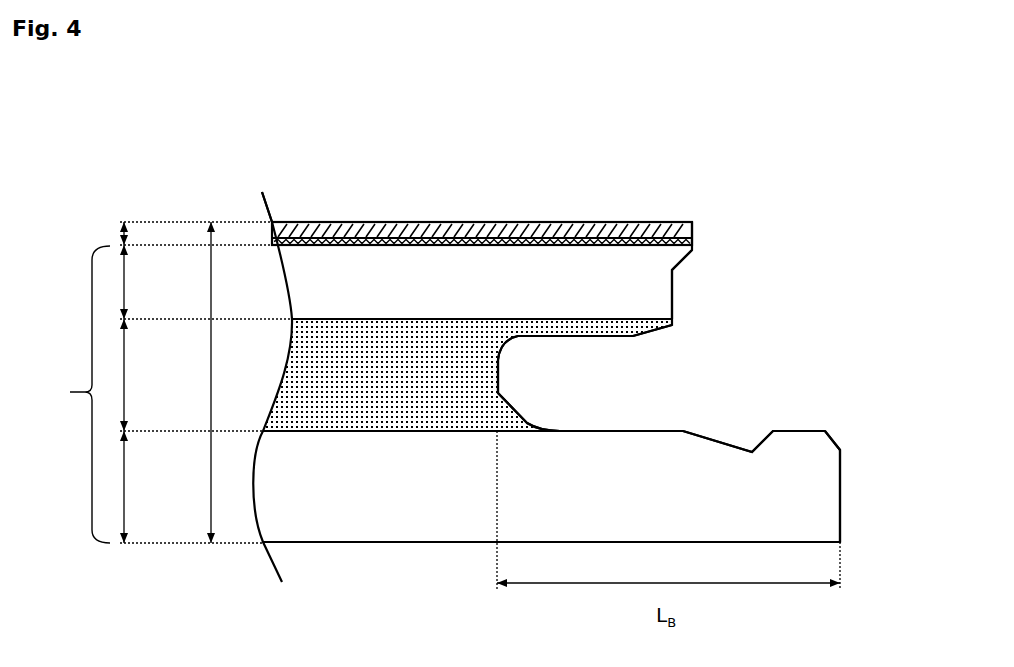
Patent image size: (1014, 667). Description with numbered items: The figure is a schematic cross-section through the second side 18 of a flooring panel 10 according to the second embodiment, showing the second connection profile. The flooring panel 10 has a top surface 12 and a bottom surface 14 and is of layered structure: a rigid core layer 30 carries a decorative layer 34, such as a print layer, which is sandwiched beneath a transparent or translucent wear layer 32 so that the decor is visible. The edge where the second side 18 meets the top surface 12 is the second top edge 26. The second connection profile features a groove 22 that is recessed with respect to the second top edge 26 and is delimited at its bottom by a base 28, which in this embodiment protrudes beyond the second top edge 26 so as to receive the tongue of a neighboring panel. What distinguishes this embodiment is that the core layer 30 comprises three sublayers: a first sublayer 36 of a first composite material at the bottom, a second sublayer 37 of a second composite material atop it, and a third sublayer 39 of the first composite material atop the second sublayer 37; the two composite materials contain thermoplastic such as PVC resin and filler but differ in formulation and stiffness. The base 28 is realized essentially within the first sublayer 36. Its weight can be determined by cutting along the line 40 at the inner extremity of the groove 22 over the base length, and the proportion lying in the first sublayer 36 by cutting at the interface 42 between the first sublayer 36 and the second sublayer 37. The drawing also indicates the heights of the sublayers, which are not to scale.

The flooring panel 10 is at (607, 150).
The top surface 12 is at (450, 222).
The bottom surface 14 is at (395, 544).
The second side 18 is at (845, 365).
The groove 22 is at (570, 392).
The second top edge 26 is at (688, 221).
The base 28 is at (668, 467).
The core layer 30 is at (159, 382).
The wear layer 32 is at (325, 222).
The decorative layer 34 is at (275, 243).
The first sublayer 36 is at (825, 516).
The second sublayer 37 is at (633, 336).
The third sublayer 39 is at (663, 290).
The line 40 is at (492, 563).
The interface 42 is at (287, 428).